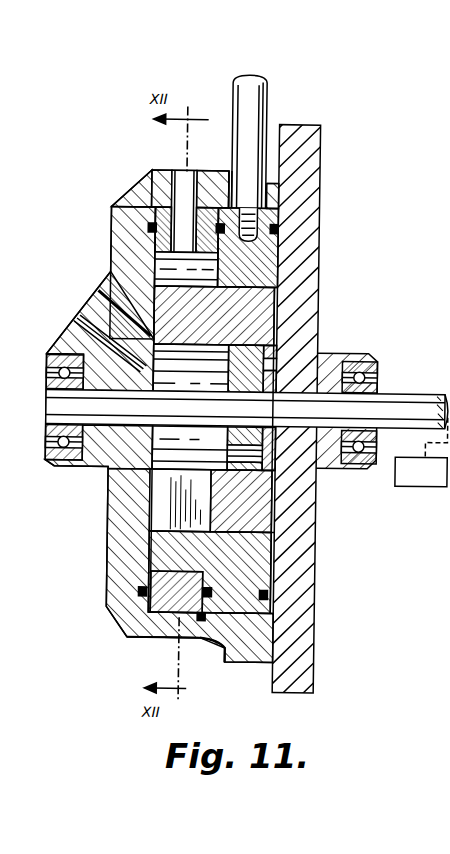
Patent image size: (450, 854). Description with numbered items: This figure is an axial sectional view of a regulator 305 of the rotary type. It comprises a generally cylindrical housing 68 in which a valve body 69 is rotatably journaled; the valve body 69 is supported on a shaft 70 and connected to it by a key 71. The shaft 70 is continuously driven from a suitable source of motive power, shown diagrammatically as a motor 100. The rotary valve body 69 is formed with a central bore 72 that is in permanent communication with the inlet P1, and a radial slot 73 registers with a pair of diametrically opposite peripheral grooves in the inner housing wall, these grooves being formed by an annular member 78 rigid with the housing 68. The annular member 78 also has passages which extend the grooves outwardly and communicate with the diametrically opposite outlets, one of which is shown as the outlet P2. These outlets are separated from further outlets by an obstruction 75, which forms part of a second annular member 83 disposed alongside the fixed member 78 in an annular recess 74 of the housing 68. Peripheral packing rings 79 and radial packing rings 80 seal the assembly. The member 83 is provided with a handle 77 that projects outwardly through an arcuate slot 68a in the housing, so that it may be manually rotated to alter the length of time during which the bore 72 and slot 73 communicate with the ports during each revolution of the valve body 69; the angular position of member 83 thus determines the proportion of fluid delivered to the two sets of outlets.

The regulator 305 is at (374, 125).
The handle 77 is at (247, 156).
The arcuate slot 68a is at (226, 172).
The outlet P2 is at (172, 170).
The peripheral packing rings 79 is at (146, 227).
The inlet P1 is at (89, 320).
The annular member 83 is at (265, 270).
The valve body 69 is at (264, 308).
The key 71 is at (337, 351).
The shaft 70 is at (389, 405).
The housing 68 is at (308, 496).
The motor 100 is at (396, 489).
The central bore 72 is at (150, 474).
The radial slot 73 is at (159, 514).
The obstruction 75 is at (159, 558).
The annular recess 74 is at (264, 592).
The annular member 78 is at (155, 638).
The radial packing rings 80 is at (211, 643).